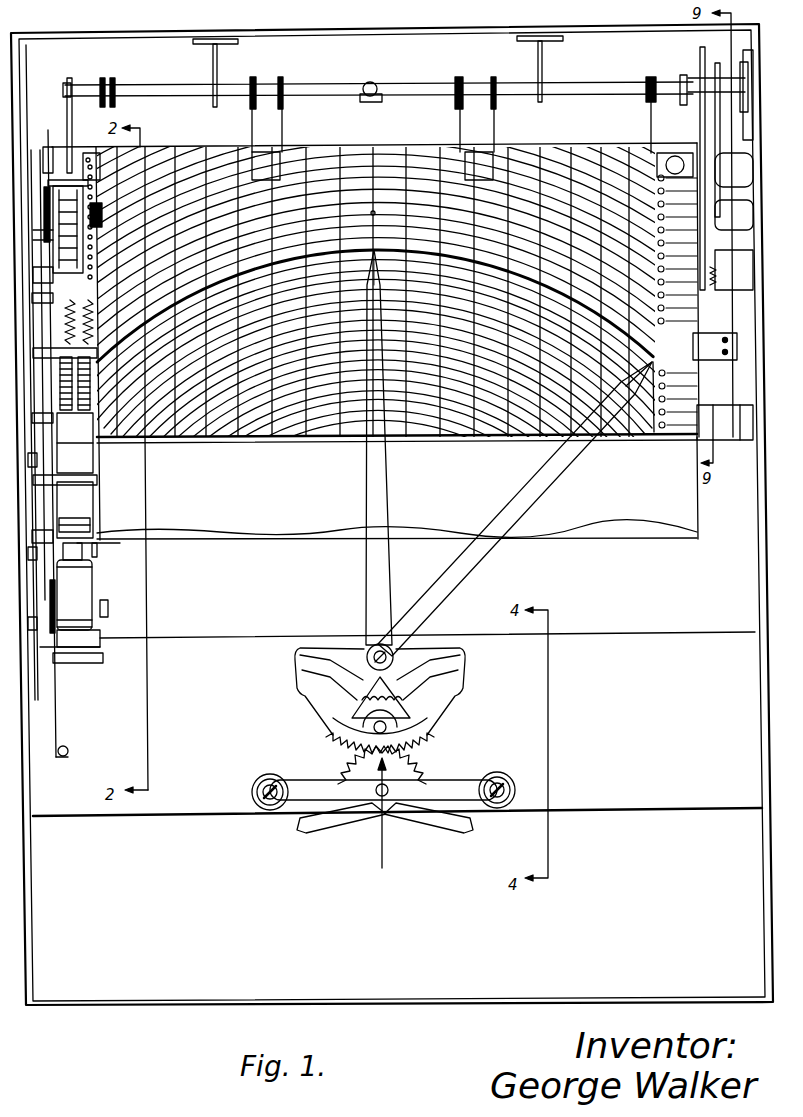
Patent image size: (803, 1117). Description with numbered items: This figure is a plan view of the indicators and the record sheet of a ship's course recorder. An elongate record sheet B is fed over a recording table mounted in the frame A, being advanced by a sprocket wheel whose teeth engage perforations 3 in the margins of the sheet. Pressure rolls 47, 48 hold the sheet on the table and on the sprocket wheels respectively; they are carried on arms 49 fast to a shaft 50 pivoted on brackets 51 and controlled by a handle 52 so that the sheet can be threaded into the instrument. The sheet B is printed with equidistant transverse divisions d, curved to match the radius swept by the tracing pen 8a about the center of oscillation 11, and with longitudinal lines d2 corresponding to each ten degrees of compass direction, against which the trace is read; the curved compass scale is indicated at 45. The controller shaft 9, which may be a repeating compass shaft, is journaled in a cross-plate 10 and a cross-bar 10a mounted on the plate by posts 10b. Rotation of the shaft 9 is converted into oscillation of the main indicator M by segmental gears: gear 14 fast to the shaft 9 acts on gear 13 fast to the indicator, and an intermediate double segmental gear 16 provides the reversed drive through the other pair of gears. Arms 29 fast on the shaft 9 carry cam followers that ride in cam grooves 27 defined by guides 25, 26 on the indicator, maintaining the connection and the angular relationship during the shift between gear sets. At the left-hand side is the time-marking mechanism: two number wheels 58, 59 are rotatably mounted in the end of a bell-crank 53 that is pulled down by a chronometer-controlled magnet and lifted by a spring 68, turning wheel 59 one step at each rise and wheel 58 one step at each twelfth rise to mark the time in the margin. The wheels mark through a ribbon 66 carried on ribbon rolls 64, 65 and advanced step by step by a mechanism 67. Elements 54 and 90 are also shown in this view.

The frame A is at (758, 360).
The record sheet B is at (548, 160).
The perforations 3 is at (668, 314).
The stylus 8a is at (378, 273).
The shaft 9 is at (388, 814).
The cross-plate 10 is at (676, 816).
The cross-bar 10a is at (458, 786).
The posts 10b is at (498, 802).
The center of oscillation 11 is at (394, 652).
The segmental gear 13 is at (432, 726).
The segmental gear 14 is at (410, 767).
The intermediate double segmental gear 16 is at (346, 721).
The guide 25 is at (296, 661).
The guide 26 is at (333, 680).
The cam groove 27 is at (306, 676).
The arms 29 is at (348, 818).
The compass scale 45 is at (240, 312).
The pressure roll 47 is at (272, 160).
The pressure roll 48 is at (102, 168).
The arms 49 is at (284, 106).
The shaft 50 is at (410, 89).
The brackets 51 is at (218, 68).
The handle 52 is at (381, 83).
The bell-crank 53 is at (95, 483).
The coil 54 is at (60, 516).
The number wheel 58 is at (96, 378).
The number wheel 59 is at (96, 354).
The ribbon roll 64 is at (77, 207).
The ribbon roll 65 is at (100, 639).
The ribbon 66 is at (103, 548).
The ribbon advancing mechanism 67 is at (53, 732).
The spring 68 is at (95, 467).
The guide 90 is at (106, 418).
The transverse divisions d is at (327, 423).
The longitudinal lines d2 is at (273, 410).